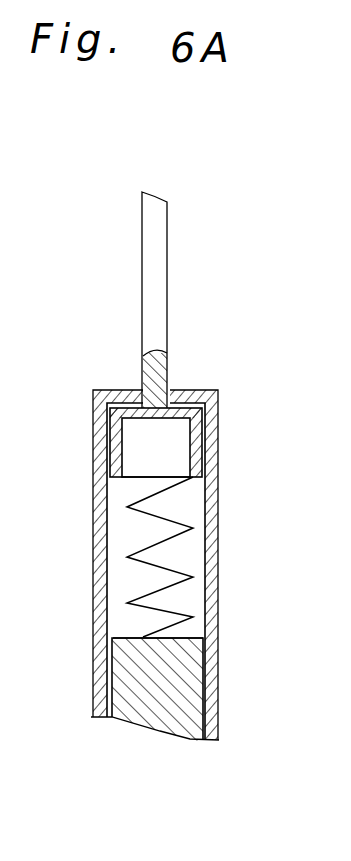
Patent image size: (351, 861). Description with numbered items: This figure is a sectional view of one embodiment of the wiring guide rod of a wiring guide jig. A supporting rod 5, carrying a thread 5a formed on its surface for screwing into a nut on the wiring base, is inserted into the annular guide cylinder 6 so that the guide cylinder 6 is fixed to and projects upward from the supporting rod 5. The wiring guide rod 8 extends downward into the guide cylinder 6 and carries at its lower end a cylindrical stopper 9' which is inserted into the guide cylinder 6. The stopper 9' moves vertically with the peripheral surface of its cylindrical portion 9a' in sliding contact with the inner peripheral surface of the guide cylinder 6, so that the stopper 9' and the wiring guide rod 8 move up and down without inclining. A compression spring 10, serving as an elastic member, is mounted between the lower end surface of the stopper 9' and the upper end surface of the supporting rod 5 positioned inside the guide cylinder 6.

The wiring guide rod 8 is at (167, 292).
The cylindrical stopper 9' is at (193, 423).
The cylindrical portion 9a' is at (204, 447).
The spring 10 is at (177, 520).
The guide cylinder 6 is at (210, 573).
The thread 5a is at (187, 637).
The supporting rod 5 is at (183, 677).